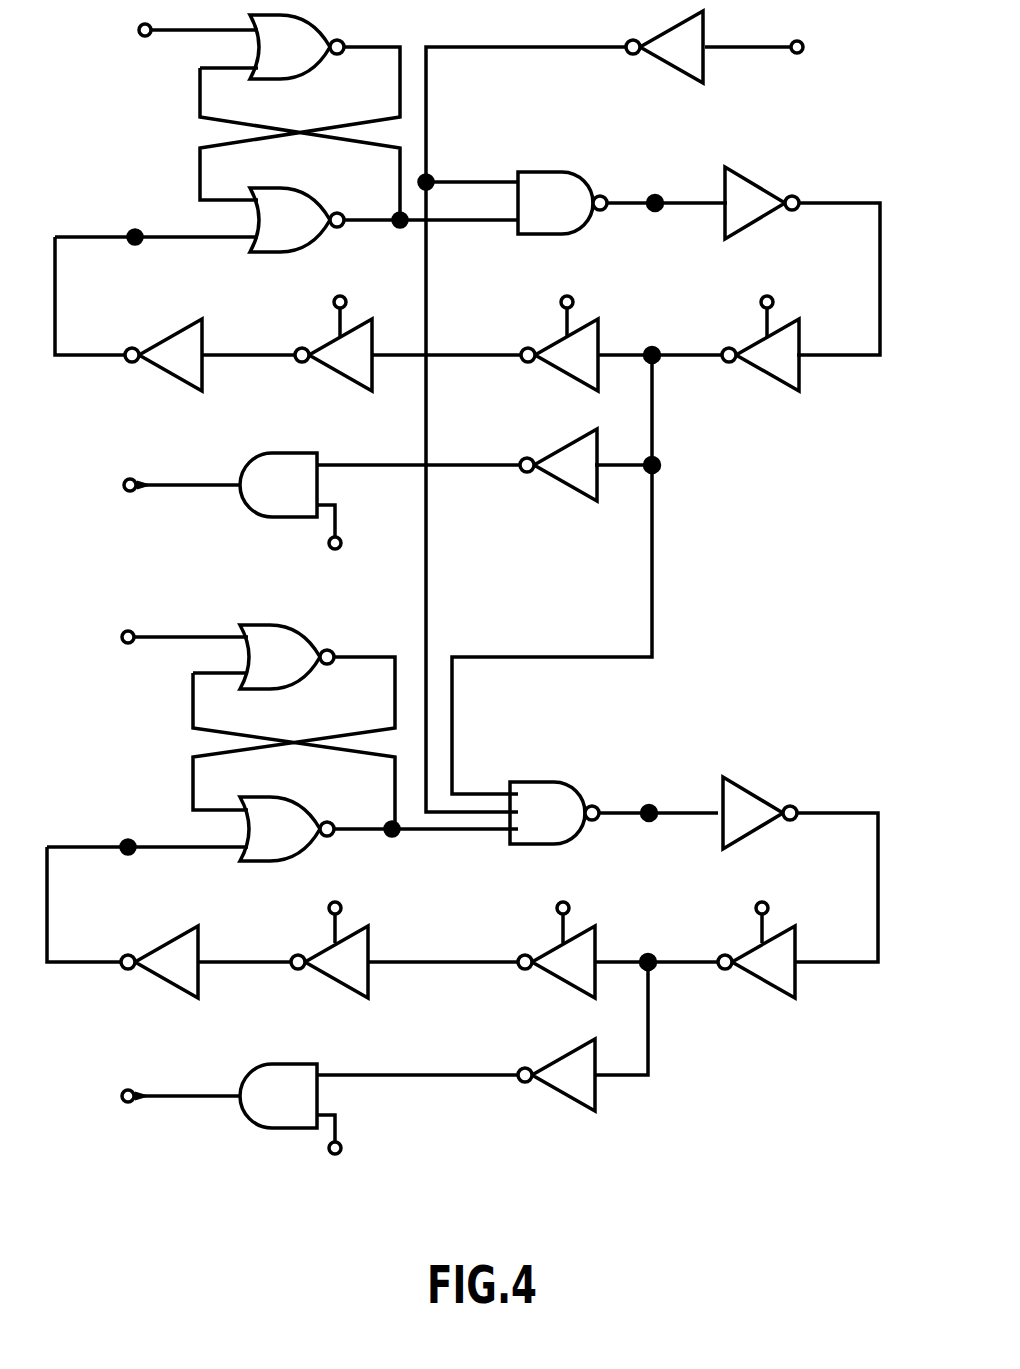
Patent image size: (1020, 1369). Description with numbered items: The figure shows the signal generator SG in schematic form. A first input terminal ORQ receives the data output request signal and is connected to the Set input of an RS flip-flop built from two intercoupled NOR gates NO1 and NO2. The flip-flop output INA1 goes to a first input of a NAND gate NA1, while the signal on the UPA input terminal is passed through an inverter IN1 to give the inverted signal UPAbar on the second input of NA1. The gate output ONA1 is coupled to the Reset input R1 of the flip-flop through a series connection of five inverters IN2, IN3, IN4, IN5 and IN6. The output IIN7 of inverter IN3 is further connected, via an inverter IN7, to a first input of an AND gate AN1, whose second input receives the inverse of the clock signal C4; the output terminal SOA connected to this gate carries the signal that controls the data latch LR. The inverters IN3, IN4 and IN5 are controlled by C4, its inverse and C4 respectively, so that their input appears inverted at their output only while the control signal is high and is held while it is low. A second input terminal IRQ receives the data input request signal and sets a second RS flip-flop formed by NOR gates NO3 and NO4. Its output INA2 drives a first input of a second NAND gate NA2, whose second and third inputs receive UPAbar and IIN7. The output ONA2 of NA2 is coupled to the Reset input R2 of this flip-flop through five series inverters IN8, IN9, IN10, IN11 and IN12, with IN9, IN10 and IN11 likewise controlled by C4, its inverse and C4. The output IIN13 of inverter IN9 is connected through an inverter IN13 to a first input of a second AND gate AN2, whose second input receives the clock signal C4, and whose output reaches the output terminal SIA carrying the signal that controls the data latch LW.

The NOR gate NO1 is at (300, 114).
The NOR gate NO2 is at (384, 220).
The NOR gate NO3 is at (294, 722).
The NOR gate NO4 is at (379, 828).
The NAND gate NA1 is at (622, 187).
The second NAND gate NA2 is at (614, 799).
The AND gate AN1 is at (287, 480).
The second AND gate AN2 is at (287, 1089).
The inverter IN1 is at (564, 411).
The inverter IN2 is at (802, 261).
The inverter IN3 is at (698, 355).
The inverter IN4 is at (485, 355).
The inverter IN5 is at (287, 355).
The inverter IN6 is at (128, 314).
The inverter IN7 is at (457, 465).
The inverter IN8 is at (800, 869).
The inverter IN9 is at (695, 962).
The inverter IN10 is at (481, 962).
The inverter IN11 is at (283, 962).
The inverter IN12 is at (122, 922).
The inverter IN13 is at (456, 1075).
The Reset input R1 is at (135, 230).
The Reset input R2 is at (128, 840).
The output of first RS flip-flop INA1 is at (401, 227).
The output of second RS flip-flop INA2 is at (393, 836).
The output of NAND gate NA1 ONA1 is at (656, 196).
The output of NAND gate NA2 ONA2 is at (650, 806).
The output of inverter IN3 IIN7 is at (659, 465).
The output of inverter IN9 IIN13 is at (649, 955).
The input terminal UPA is at (780, 48).
The inverted UPA input UPAbar is at (492, 139).
The first input terminal ORQ is at (169, 30).
The second input terminal IRQ is at (160, 639).
The output terminal SOA is at (156, 487).
The output terminal SIA is at (156, 1098).
The clock signal C4 is at (580, 868).
The signal generator SG is at (798, 629).